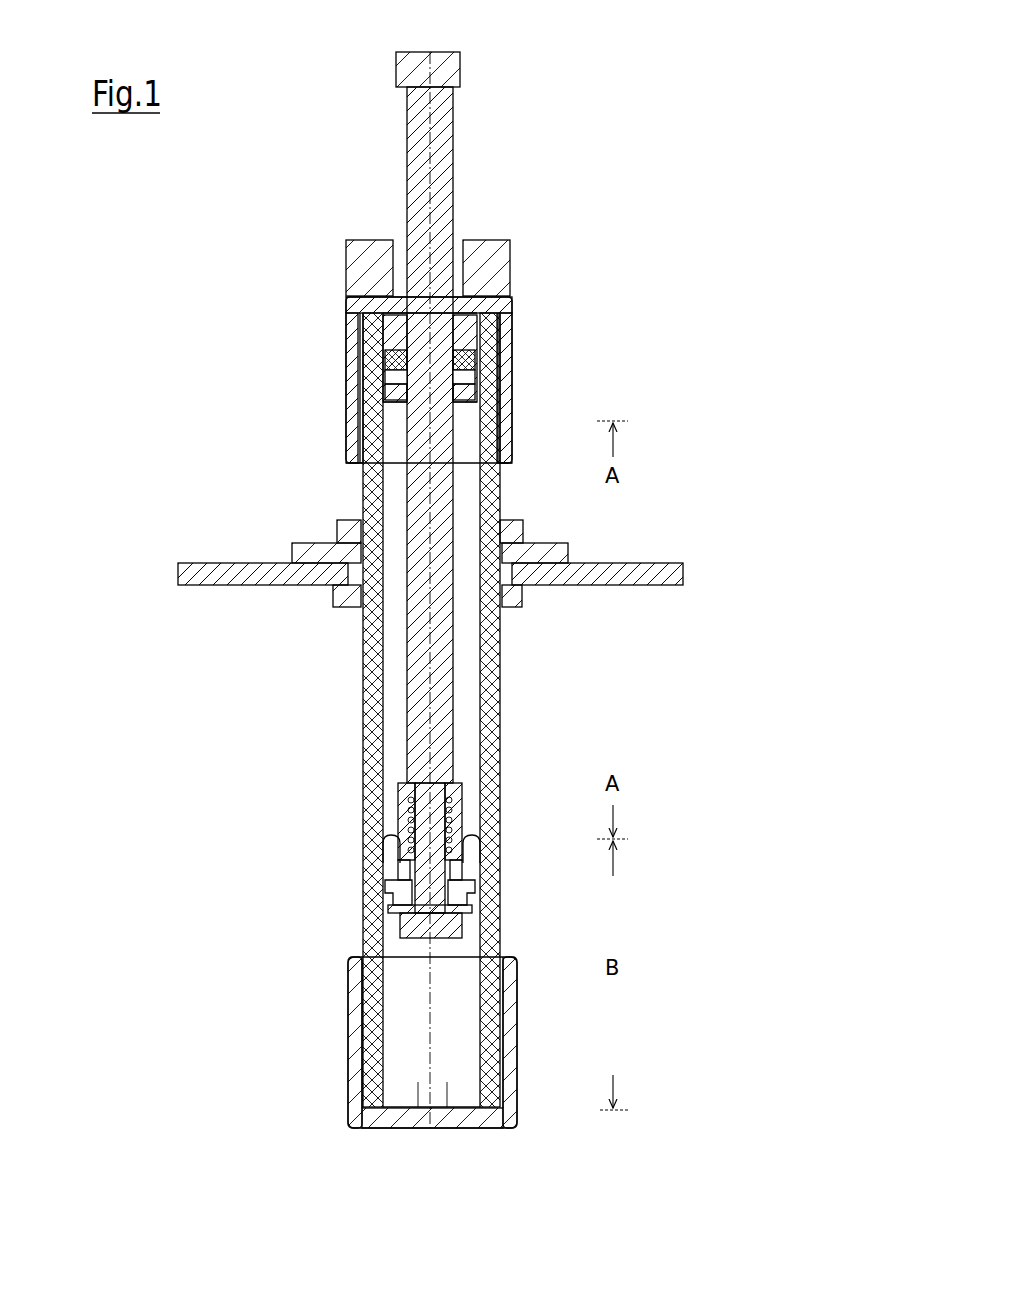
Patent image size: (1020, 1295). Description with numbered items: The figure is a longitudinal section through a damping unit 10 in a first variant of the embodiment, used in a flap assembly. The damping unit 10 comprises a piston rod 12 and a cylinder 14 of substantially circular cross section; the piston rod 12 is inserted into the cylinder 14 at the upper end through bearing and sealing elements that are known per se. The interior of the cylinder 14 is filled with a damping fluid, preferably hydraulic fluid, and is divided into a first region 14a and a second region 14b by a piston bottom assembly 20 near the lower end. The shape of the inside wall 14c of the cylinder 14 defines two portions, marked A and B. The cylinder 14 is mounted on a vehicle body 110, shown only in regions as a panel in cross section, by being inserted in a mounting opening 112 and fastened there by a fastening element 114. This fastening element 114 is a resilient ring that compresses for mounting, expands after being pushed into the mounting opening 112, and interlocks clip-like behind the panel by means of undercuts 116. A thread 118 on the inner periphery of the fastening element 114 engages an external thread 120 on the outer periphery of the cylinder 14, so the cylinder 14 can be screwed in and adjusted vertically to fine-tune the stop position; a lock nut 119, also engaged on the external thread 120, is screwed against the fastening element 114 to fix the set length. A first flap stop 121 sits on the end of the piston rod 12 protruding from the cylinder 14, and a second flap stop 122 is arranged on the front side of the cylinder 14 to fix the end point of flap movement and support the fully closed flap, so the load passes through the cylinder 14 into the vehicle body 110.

The damping unit 10 is at (560, 116).
The piston rod 12 is at (415, 208).
The cylinder 14 is at (358, 729).
The first region 14a is at (470, 690).
The second region 14b is at (474, 1098).
The inside wall 14c is at (478, 740).
The piston bottom assembly 20 is at (297, 1082).
The vehicle body 110 is at (640, 586).
The mounting opening 112 is at (513, 590).
The fastening element 114 is at (553, 546).
The undercuts 116 is at (330, 580).
The thread 118 is at (348, 612).
The lock nut 119 is at (338, 530).
The external thread 120 is at (350, 520).
The first flap stop 121 is at (433, 52).
The second flap stop 122 is at (500, 253).